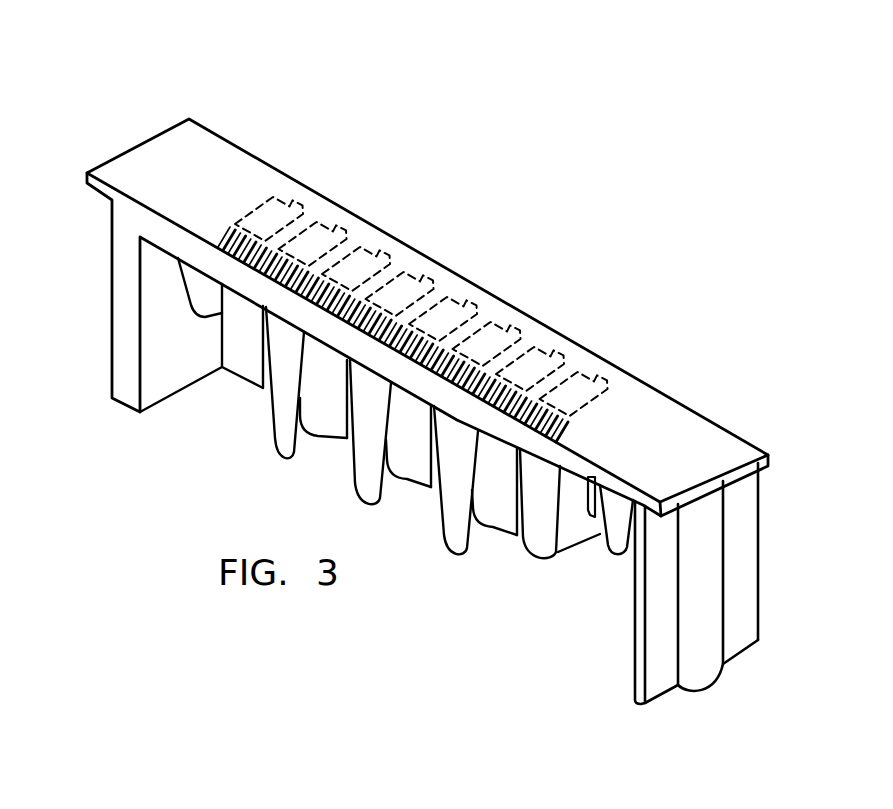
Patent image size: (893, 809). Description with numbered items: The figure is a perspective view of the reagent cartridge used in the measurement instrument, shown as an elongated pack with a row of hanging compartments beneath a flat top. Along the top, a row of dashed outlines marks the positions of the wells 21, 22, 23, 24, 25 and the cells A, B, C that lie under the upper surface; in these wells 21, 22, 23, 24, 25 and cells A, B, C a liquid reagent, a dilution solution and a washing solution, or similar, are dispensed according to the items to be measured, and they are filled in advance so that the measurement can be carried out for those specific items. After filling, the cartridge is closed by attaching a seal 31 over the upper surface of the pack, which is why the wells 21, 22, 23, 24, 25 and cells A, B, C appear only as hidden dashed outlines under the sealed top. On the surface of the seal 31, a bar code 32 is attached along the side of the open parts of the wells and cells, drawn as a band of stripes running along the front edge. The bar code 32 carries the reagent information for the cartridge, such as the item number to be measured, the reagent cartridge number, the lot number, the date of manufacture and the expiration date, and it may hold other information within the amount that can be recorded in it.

The seal 31 is at (138, 143).
The bar code 32 is at (219, 232).
The well 21 is at (314, 200).
The well 22 is at (404, 246).
The well 23 is at (488, 293).
The well 24 is at (578, 340).
The well 25 is at (626, 367).
The cell A is at (371, 215).
The cell B is at (451, 260).
The cell C is at (538, 317).